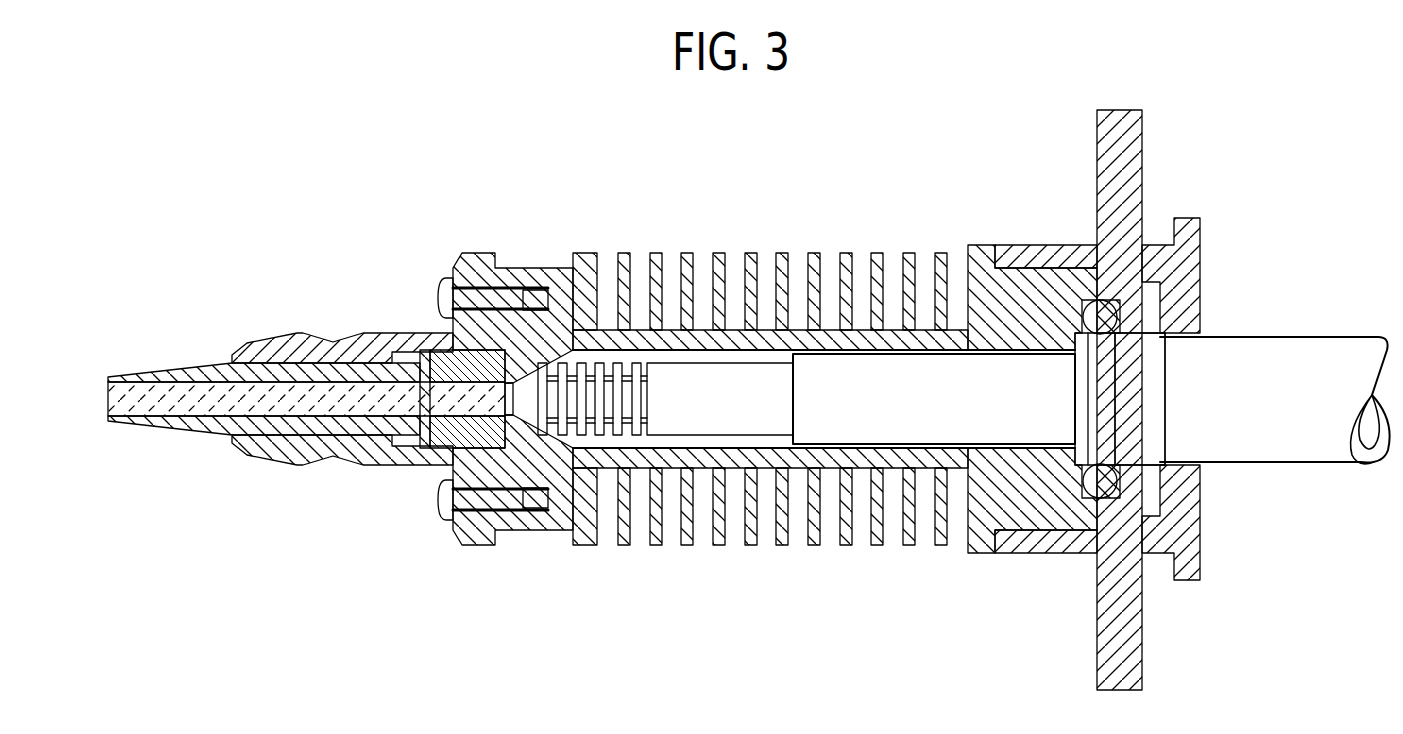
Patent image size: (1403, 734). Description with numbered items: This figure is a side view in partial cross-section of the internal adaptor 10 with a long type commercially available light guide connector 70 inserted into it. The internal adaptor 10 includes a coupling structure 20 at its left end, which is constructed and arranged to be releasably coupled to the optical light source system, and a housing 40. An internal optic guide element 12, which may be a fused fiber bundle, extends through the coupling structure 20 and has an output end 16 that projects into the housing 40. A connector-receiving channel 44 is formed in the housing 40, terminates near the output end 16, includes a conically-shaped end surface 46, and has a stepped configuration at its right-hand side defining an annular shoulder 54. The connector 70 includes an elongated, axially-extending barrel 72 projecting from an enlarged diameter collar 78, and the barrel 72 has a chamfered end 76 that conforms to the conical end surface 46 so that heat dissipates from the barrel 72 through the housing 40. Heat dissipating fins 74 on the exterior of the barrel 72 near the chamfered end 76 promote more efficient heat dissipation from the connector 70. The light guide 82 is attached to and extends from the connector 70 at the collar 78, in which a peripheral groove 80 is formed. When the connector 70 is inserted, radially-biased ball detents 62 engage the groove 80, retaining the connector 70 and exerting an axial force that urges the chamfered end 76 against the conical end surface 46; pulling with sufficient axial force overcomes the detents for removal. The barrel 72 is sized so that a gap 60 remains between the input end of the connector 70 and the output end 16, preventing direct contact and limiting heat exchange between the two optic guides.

The internal adaptor 10 is at (428, 240).
The internal optic guide element 12 is at (103, 412).
The output end 16 is at (530, 362).
The coupling structure 20 is at (266, 338).
The housing 40 is at (688, 248).
The connector-receiving channel 44 is at (757, 362).
The conically-shaped end surface 46 is at (567, 350).
The annular shoulder 54 is at (1066, 333).
The gap 60 is at (505, 380).
The ball detents 62 is at (1112, 335).
The light guide connector 70 is at (776, 446).
The barrel 72 is at (895, 370).
The heat dissipating fins 74 is at (595, 433).
The chamfered end 76 is at (528, 415).
The collar 78 is at (1153, 473).
The peripheral groove 80 is at (1105, 440).
The light guide 82 is at (1340, 343).